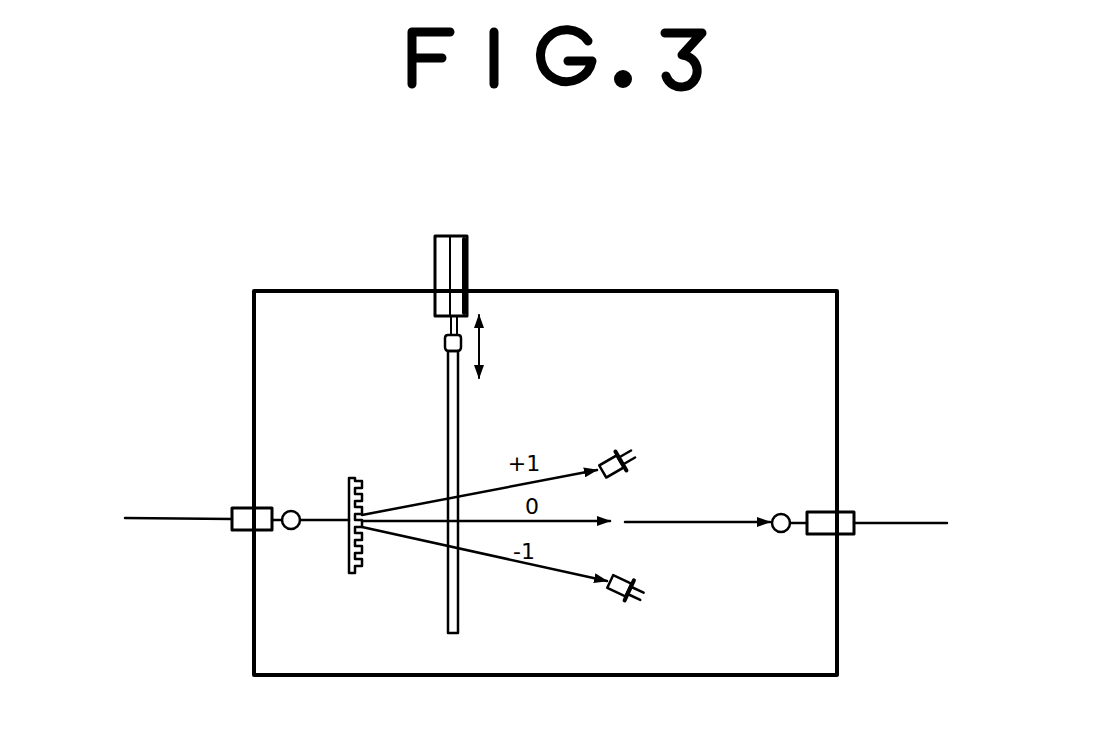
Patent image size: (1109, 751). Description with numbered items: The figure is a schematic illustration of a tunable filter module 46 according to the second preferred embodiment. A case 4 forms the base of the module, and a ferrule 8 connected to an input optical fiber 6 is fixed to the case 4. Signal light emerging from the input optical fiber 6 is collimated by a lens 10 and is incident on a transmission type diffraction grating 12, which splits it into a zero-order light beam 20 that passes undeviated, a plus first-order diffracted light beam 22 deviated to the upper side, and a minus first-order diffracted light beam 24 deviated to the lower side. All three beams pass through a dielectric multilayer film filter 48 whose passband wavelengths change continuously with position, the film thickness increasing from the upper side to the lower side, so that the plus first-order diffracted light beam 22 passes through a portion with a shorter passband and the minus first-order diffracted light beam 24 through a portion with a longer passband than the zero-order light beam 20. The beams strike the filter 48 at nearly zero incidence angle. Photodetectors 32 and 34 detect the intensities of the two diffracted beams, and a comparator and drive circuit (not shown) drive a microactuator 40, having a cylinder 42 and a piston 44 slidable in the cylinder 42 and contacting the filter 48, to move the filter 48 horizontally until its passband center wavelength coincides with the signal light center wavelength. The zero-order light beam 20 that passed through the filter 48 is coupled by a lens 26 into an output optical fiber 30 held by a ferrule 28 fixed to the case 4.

The case 4 is at (545, 428).
The input optical fiber 6 is at (170, 514).
The ferrule 8 is at (240, 527).
The lens 10 is at (289, 507).
The transmission type diffraction grating 12 is at (350, 570).
The zero-order light beam 20 is at (572, 518).
The plus first-order diffracted light beam 22 is at (560, 473).
The minus first-order diffracted light beam 24 is at (555, 567).
The lens 26 is at (779, 511).
The ferrule 28 is at (847, 509).
The output optical fiber 30 is at (903, 522).
The photodetector 32 is at (618, 448).
The photodetector 34 is at (625, 600).
The microactuator 40 is at (433, 394).
The cylinder 42 is at (433, 250).
The piston 44 is at (443, 337).
The tunable filter module 46 is at (667, 288).
The dielectric multilayer film filter 48 is at (446, 421).